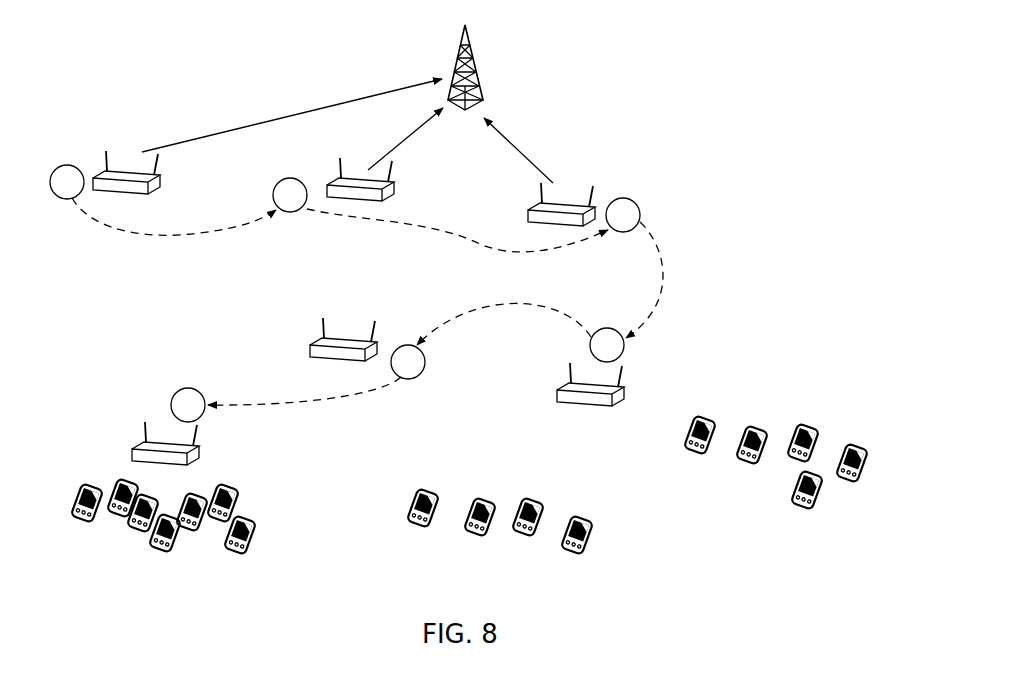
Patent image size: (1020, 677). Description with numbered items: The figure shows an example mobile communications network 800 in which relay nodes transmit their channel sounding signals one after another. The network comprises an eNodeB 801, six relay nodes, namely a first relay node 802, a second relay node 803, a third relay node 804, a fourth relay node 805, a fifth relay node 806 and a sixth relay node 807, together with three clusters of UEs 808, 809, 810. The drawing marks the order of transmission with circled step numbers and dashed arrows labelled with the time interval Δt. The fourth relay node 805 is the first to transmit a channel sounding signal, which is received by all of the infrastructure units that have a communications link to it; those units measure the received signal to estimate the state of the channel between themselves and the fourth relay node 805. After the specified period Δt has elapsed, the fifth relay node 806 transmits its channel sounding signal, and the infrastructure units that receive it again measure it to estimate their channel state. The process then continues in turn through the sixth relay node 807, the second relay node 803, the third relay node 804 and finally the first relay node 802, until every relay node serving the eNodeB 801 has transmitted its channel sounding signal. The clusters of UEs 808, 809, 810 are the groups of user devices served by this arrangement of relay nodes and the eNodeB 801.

The mobile communications network 800 is at (690, 88).
The eNodeB 801 is at (452, 74).
The first relay node 802 is at (199, 453).
The second relay node 803 is at (590, 405).
The third relay node 804 is at (356, 326).
The fourth relay node 805 is at (160, 182).
The fifth relay node 806 is at (394, 190).
The sixth relay node 807 is at (597, 195).
The cluster of UEs 808 is at (203, 567).
The cluster of UEs 809 is at (598, 548).
The cluster of UEs 810 is at (770, 475).